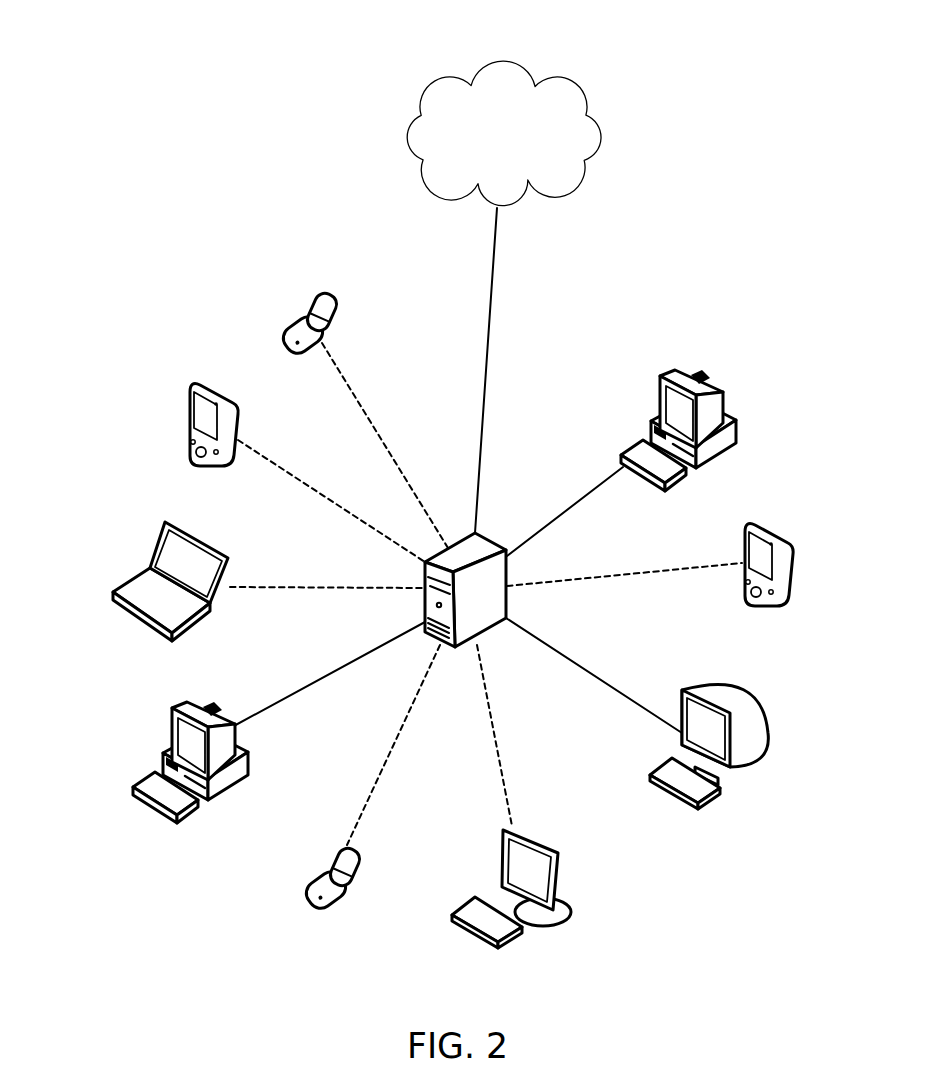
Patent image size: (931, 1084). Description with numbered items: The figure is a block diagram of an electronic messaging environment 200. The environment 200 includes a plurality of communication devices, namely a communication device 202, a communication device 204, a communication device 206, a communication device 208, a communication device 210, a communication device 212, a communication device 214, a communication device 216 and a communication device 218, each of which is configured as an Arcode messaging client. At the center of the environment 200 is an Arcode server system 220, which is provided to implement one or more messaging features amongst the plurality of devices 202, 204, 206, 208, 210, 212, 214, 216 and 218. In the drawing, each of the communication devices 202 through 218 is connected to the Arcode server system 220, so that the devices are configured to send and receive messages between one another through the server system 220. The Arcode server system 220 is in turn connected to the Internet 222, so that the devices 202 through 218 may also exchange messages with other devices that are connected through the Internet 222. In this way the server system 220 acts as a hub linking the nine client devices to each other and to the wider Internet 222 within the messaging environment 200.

The electronic messaging environment 200 is at (146, 49).
The communication device 202 is at (282, 340).
The communication device 204 is at (188, 388).
The communication device 206 is at (158, 545).
The communication device 208 is at (172, 727).
The communication device 210 is at (325, 866).
The communication device 212 is at (565, 862).
The communication device 214 is at (765, 722).
The communication device 216 is at (790, 555).
The communication device 218 is at (722, 395).
The Arcode server system 220 is at (497, 542).
The Internet 222 is at (504, 133).